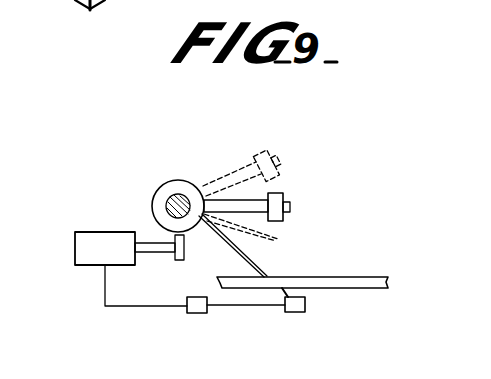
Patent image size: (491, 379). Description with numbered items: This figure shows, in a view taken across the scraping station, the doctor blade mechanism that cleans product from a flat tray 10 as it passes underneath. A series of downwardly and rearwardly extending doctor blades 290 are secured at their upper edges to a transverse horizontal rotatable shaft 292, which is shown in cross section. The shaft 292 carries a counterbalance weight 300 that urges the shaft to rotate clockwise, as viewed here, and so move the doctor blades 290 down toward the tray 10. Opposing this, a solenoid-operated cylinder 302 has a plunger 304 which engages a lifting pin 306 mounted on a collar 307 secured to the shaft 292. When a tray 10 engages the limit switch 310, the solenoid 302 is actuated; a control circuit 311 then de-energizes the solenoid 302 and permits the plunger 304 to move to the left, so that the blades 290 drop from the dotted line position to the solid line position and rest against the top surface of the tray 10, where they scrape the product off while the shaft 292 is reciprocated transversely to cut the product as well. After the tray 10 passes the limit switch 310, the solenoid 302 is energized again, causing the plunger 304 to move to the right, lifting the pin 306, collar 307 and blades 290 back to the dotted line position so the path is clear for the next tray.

The flat tray 10 is at (356, 276).
The doctor blades 290 is at (260, 271).
The rotatable shaft 292 is at (182, 198).
The counterbalance weight 300 is at (279, 193).
The solenoid-operated cylinder 302 is at (83, 231).
The plunger 304 is at (157, 253).
The lifting pin 306 is at (185, 246).
The collar 307 is at (163, 186).
The limit switch 310 is at (305, 302).
The control circuit 311 is at (207, 315).